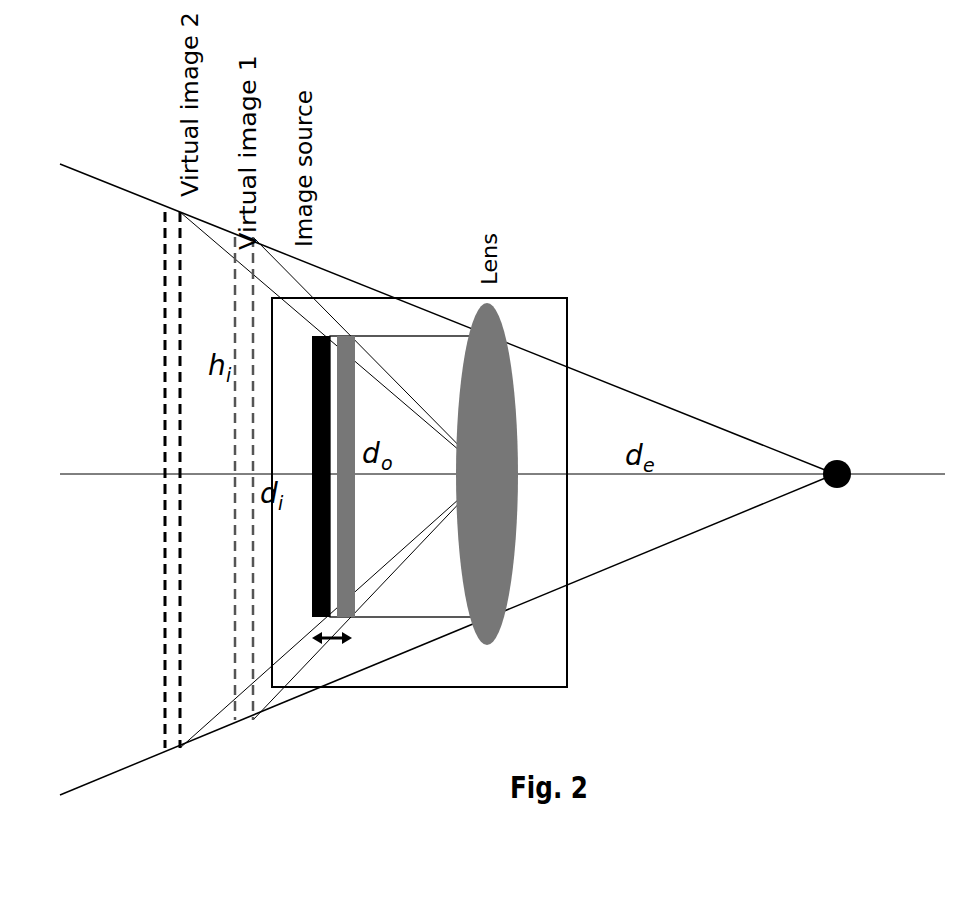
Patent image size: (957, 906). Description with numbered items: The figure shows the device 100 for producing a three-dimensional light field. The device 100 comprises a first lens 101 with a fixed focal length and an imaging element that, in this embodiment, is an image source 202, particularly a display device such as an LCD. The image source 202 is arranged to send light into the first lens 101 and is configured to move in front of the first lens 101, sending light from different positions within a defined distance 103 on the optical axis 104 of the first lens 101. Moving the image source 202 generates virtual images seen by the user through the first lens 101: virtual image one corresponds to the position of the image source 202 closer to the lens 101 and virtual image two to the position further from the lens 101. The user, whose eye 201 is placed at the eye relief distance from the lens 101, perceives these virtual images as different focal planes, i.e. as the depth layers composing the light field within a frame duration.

The device 100 is at (735, 212).
The first lens 101 is at (505, 322).
The defined distance 103 is at (333, 647).
The optical axis 104 is at (533, 473).
The eye 201 is at (845, 460).
The image source 202 is at (346, 336).